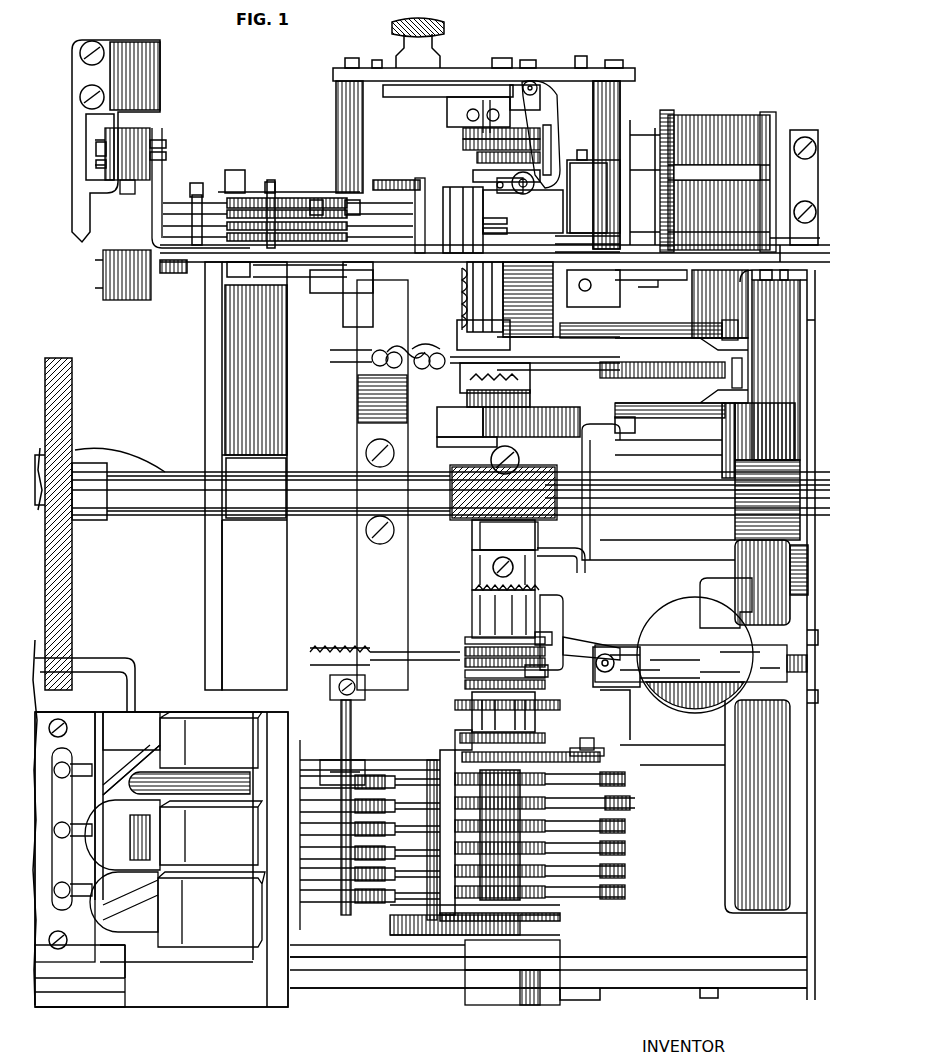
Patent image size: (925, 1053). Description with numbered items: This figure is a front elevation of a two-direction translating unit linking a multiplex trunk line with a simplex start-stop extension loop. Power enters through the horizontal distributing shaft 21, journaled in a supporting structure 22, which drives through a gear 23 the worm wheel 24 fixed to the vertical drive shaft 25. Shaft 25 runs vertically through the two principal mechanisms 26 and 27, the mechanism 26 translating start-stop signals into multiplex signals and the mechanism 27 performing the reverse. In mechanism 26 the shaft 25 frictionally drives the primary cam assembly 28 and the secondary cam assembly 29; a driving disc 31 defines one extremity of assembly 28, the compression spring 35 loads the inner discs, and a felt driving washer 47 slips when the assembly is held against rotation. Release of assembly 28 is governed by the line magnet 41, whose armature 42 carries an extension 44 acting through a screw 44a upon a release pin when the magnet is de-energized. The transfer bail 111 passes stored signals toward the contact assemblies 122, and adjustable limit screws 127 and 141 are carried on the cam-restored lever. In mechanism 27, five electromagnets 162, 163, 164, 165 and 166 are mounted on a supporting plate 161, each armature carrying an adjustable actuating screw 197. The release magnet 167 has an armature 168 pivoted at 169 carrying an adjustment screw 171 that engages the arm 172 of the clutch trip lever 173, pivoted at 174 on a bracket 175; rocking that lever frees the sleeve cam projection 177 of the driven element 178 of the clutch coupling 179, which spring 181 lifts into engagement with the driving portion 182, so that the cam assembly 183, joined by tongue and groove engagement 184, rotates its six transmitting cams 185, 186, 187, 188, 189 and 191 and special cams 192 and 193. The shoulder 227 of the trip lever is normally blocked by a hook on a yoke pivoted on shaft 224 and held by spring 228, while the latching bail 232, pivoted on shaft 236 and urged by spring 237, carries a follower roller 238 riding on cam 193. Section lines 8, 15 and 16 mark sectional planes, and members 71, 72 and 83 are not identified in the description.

The section line 8 is at (295, 356).
The section line 15 is at (350, 593).
The section line 16 is at (350, 745).
The horizontal distributing shaft 21 is at (165, 494).
The supporting structure 22 is at (401, 598).
The gear 23 is at (541, 523).
The worm wheel 24 is at (580, 498).
The vertical drive shaft 25 is at (476, 543).
The simplex to multiplex translating mechanism 26 is at (636, 110).
The multiplex to simplex translating mechanism 27 is at (445, 990).
The primary cam assembly 28 is at (466, 152).
The secondary cam assembly 29 is at (566, 330).
The driving disc 31 is at (548, 130).
The compression spring 35 is at (462, 302).
The line magnet 41 is at (714, 133).
The armature 42 is at (673, 275).
The extension 44 is at (558, 97).
The screw 44a is at (538, 83).
The felt driving washer 47 is at (487, 108).
The threaded rod 71 is at (661, 366).
The rack 72 is at (665, 416).
The rod 83 is at (419, 254).
The transfer bail 111 is at (161, 182).
The contact assemblies 122 is at (152, 126).
The adjustable limit screw 127 is at (421, 368).
The adjustable limit screw 141 is at (381, 362).
The supporting plate 161 is at (210, 982).
The electromagnet 162 is at (108, 922).
The electromagnet 163 is at (226, 892).
The electromagnet 164 is at (161, 810).
The electromagnet 165 is at (191, 770).
The electromagnet 166 is at (141, 720).
The release magnet 167 is at (675, 720).
The armature 168 is at (716, 664).
The pivot 169 is at (756, 718).
The adjustment screw 171 is at (615, 672).
The sidewardly extending arm 172 is at (586, 648).
The clutch trip lever 173 is at (556, 610).
The pivot 174 is at (580, 552).
The bracket 175 is at (592, 468).
The sleeve cam projection 177 is at (553, 638).
The driven element 178 is at (471, 624).
The clutch coupling 179 is at (466, 593).
The expansive coil spring 181 is at (466, 665).
The driving portion 182 is at (481, 571).
The cam assembly 183 is at (470, 907).
The tongue and groove engagement 184 is at (463, 684).
The transmitting cam 185 is at (590, 766).
The transmitting cam 186 is at (630, 802).
The transmitting cam 187 is at (628, 832).
The transmitting cam 188 is at (628, 854).
The transmitting cam 189 is at (628, 876).
The transmitting cam 191 is at (628, 897).
The special function performing cam 192 is at (546, 703).
The special function performing cam 193 is at (465, 742).
The adjustable actuating screw 197 is at (76, 821).
The shaft 224 is at (338, 705).
The downwardly protruding shoulder 227 is at (536, 672).
The spring 228 is at (323, 647).
The latching bail 232 is at (434, 886).
The shaft 236 is at (587, 738).
The spring 237 is at (511, 930).
The follower roller 238 is at (540, 740).